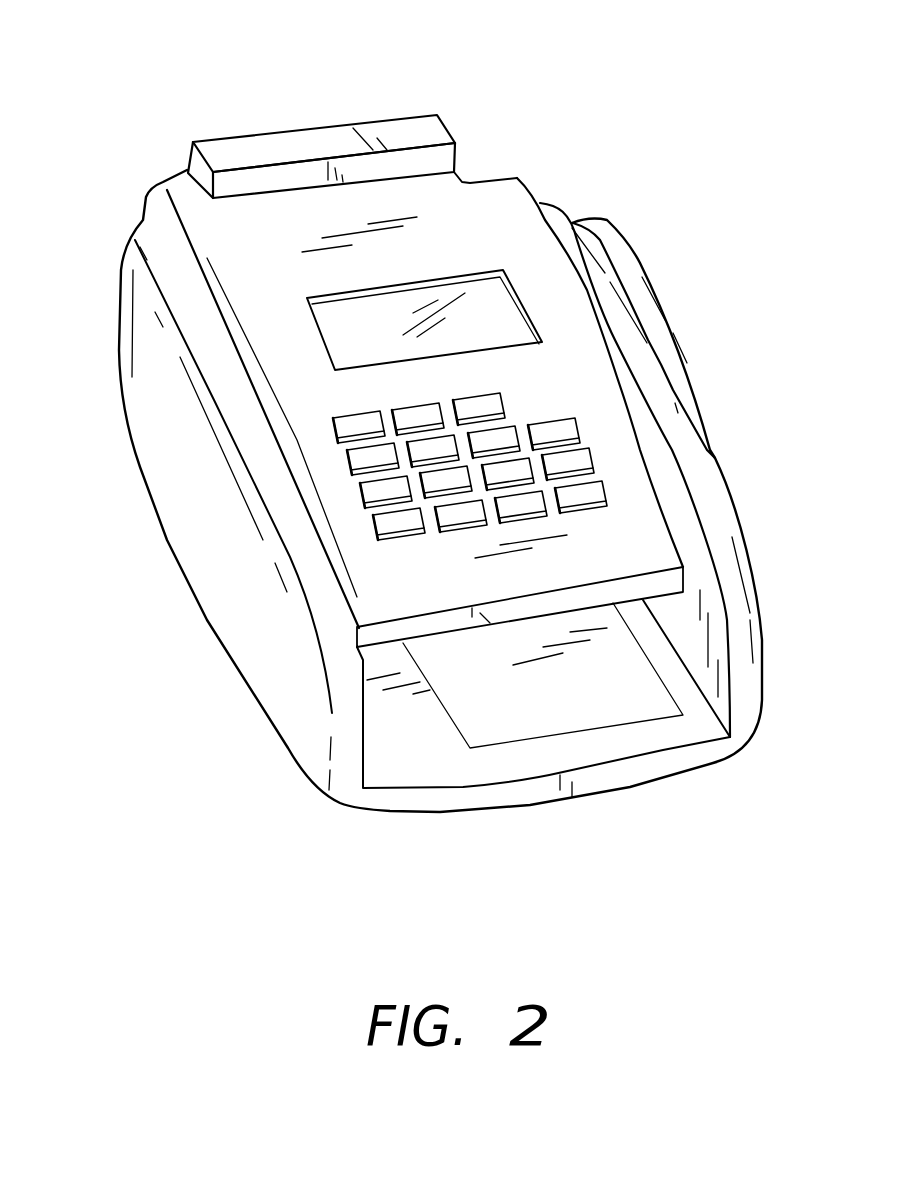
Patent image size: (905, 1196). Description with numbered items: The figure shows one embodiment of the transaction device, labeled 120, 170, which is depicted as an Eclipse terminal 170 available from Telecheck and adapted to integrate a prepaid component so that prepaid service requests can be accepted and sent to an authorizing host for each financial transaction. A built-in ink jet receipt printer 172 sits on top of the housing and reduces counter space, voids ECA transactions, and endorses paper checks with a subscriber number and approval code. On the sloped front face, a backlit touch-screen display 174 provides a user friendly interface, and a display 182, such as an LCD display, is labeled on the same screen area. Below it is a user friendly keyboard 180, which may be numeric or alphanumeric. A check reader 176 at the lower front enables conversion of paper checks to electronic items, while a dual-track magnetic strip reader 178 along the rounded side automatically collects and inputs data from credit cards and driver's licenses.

The check processing device 120 is at (405, 412).
The Eclipse terminal 170 is at (238, 83).
The built-in ink jet receipt printer 172 is at (322, 113).
The backlit touch-screen display 174 is at (499, 241).
The check reader 176 is at (568, 667).
The dual-track magnetic strip reader 178 is at (637, 248).
The keyboard 180 is at (588, 438).
The display 182 is at (482, 315).